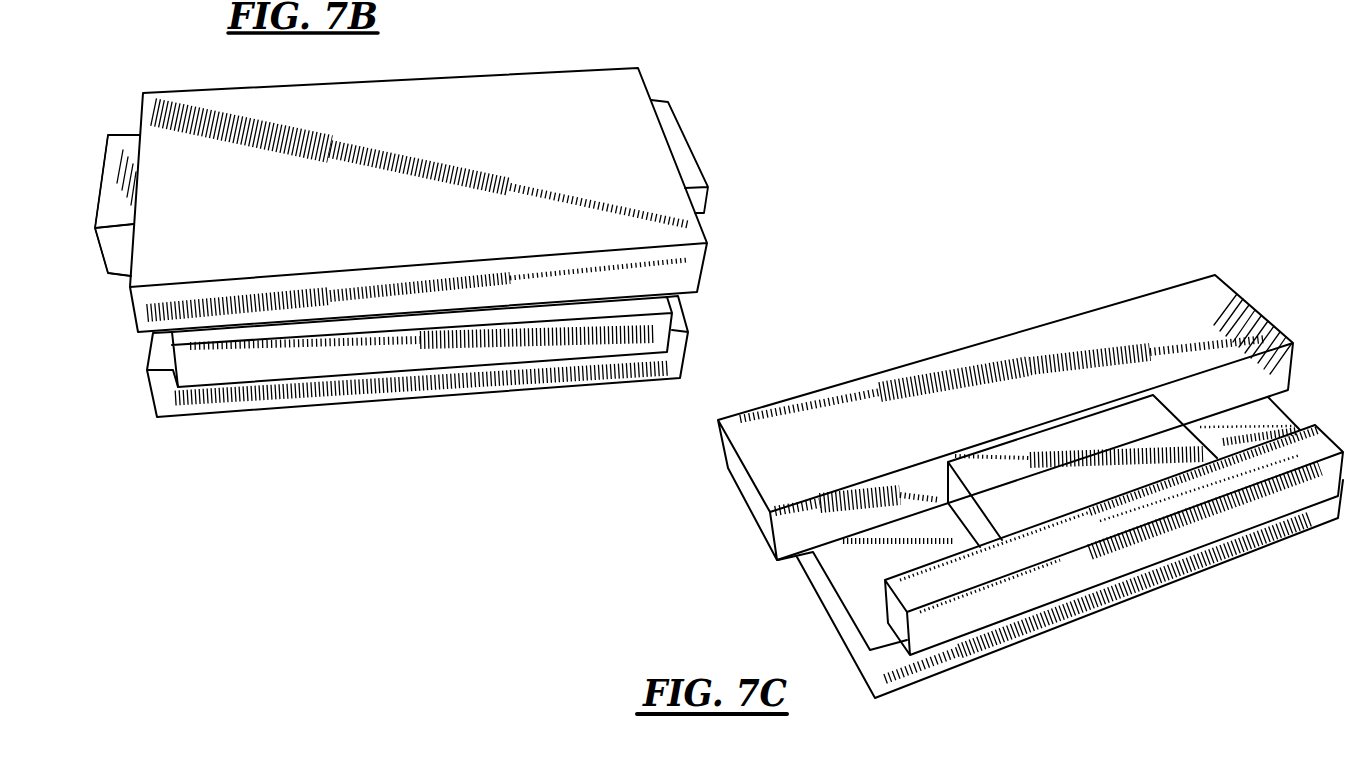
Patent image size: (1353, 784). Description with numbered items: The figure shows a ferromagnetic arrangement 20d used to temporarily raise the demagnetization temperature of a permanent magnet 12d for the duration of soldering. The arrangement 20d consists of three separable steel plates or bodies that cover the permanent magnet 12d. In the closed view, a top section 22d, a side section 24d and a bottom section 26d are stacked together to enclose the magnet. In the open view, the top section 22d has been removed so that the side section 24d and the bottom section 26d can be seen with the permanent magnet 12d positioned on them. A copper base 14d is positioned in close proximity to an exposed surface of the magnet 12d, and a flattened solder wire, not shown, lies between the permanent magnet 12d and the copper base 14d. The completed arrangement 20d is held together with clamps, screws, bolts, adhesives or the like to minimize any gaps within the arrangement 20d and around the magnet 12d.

In FIG. 7B, the ferromagnetic arrangement 20d is at (705, 103).
In FIG. 7C, the ferromagnetic arrangement 20d is at (934, 321).
In FIG. 7B, the top section 22d is at (500, 97).
In FIG. 7B, the side section 24d is at (112, 187).
In FIG. 7C, the side section 24d is at (1217, 317).
In FIG. 7B, the copper base 14d is at (628, 332).
In FIG. 7C, the copper base 14d is at (1303, 480).
In FIG. 7C, the permanent magnet 12d is at (1157, 437).
In FIG. 7B, the bottom section 26d is at (150, 355).
In FIG. 7C, the bottom section 26d is at (828, 597).